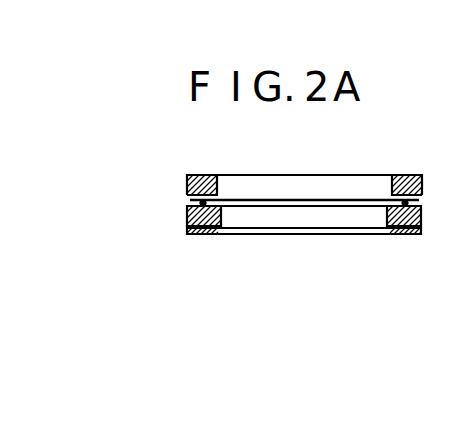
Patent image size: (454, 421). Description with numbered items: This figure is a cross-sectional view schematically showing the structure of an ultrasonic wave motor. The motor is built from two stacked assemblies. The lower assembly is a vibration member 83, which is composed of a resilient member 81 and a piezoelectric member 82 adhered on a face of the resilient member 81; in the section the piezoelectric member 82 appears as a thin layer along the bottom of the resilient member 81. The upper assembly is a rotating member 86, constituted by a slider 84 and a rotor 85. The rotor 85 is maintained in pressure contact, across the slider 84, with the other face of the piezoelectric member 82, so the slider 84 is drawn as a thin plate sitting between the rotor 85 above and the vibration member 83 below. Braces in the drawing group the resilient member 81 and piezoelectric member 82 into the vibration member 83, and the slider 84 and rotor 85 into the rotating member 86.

The rotating member 86 is at (97, 130).
The rotor 85 is at (188, 178).
The slider 84 is at (188, 190).
The vibration member 83 is at (97, 235).
The resilient member 81 is at (188, 218).
The piezoelectric member 82 is at (197, 235).